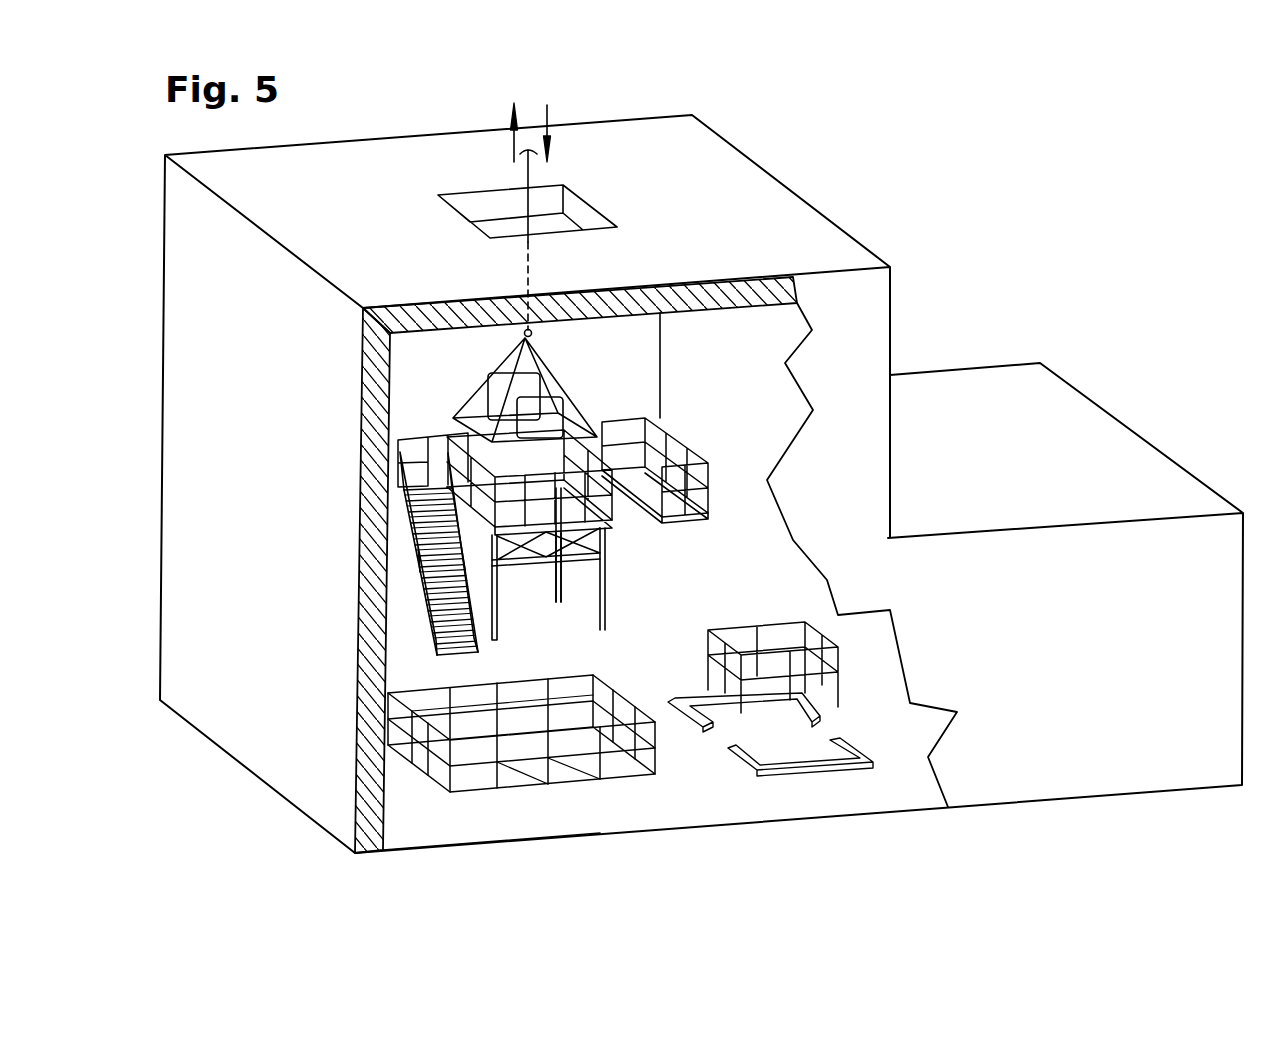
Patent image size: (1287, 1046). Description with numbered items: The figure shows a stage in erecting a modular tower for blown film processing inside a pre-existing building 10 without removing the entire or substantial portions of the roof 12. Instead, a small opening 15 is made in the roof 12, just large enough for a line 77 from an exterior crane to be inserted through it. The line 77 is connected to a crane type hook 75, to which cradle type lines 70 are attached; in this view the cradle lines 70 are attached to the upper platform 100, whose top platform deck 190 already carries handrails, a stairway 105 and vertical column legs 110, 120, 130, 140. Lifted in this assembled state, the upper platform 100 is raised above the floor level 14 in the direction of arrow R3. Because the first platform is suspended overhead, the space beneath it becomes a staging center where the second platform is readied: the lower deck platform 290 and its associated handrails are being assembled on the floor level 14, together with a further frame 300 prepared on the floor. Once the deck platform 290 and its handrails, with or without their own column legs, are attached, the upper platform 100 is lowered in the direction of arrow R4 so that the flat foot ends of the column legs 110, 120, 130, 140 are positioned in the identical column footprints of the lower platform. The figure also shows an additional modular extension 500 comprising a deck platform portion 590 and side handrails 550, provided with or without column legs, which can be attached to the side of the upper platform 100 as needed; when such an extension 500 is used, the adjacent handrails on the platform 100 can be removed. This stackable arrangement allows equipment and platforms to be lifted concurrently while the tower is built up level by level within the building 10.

The building 10 is at (863, 452).
The roof 12 is at (710, 293).
The floor level 14 is at (447, 840).
The opening 15 is at (597, 210).
The cradle type lines 70 is at (577, 408).
The crane type hook 75 is at (532, 332).
The line 77 is at (530, 177).
The upper platform 100 is at (398, 423).
The stairway 105 is at (417, 567).
The vertical column leg 110 is at (600, 580).
The vertical column leg 120 is at (548, 597).
The vertical column leg 130 is at (413, 538).
The vertical column leg 140 is at (497, 627).
The top platform deck 190 is at (612, 527).
The deck platform 290 is at (577, 783).
The support frame 300 is at (756, 612).
The modular extension 500 is at (689, 454).
The side handrails 550 is at (683, 462).
The deck platform portion 590 is at (680, 517).
The direction arrow R3 is at (490, 132).
The direction arrow R4 is at (566, 131).